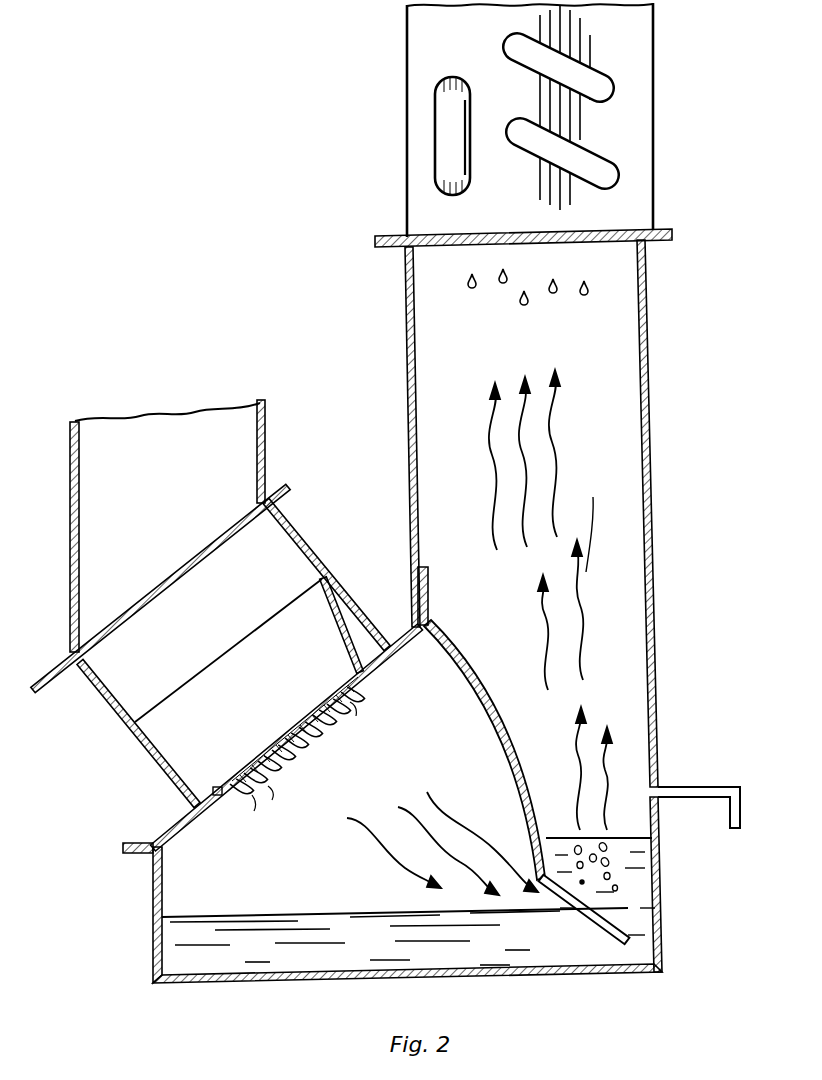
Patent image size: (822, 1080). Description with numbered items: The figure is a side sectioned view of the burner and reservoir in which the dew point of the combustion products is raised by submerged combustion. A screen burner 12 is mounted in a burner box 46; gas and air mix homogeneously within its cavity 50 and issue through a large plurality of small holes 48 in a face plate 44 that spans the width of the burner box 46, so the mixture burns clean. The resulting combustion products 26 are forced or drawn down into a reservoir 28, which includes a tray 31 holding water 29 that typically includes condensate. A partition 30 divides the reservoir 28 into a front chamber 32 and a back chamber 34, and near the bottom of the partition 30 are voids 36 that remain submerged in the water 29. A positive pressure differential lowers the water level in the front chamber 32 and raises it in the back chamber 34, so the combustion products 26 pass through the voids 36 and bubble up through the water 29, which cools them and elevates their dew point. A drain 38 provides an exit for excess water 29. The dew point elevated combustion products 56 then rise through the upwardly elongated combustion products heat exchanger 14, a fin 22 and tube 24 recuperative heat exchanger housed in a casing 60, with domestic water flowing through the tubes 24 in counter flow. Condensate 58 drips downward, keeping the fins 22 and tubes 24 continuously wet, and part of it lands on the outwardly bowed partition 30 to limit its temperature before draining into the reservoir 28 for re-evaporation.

The casing 60 is at (406, 38).
The fin 22 is at (592, 60).
The tube 24 is at (436, 133).
The combustion products heat exchanger 14 is at (654, 120).
The condensate 58 is at (553, 297).
The dew point elevated combustion products 56 is at (568, 485).
The back chamber 34 is at (633, 688).
The partition 30 is at (519, 757).
The drain 38 is at (690, 787).
The voids 36 is at (575, 903).
The tray 31 is at (545, 975).
The reservoir 28 is at (290, 964).
The water 29 is at (272, 913).
The burner box 46 is at (165, 830).
The burner 12 is at (180, 768).
The cavity 50 is at (259, 692).
The face plate 44 is at (298, 714).
The holes 48 is at (243, 748).
The front chamber 32 is at (442, 827).
The combustion products 26 is at (452, 812).